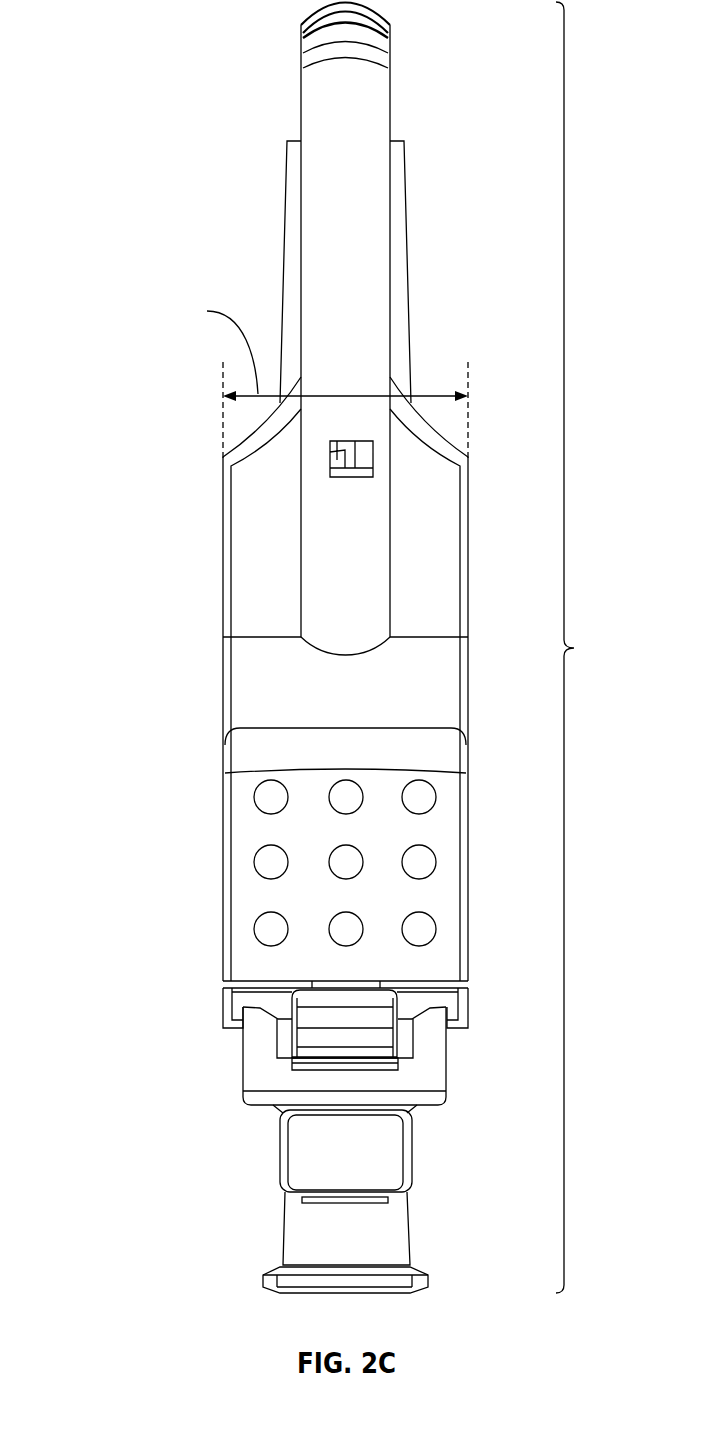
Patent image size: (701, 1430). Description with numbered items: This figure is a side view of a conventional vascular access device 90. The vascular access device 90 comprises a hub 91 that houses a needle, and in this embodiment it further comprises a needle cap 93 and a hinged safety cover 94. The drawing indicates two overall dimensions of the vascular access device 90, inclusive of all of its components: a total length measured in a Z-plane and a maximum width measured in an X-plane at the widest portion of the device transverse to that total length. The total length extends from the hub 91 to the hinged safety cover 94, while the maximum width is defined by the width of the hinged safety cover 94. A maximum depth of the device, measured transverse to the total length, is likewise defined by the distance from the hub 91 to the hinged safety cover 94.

The vascular access device 90 is at (112, 34).
The hub 91 is at (283, 1236).
The needle cap 93 is at (285, 228).
The hinged safety cover 94 is at (380, 90).